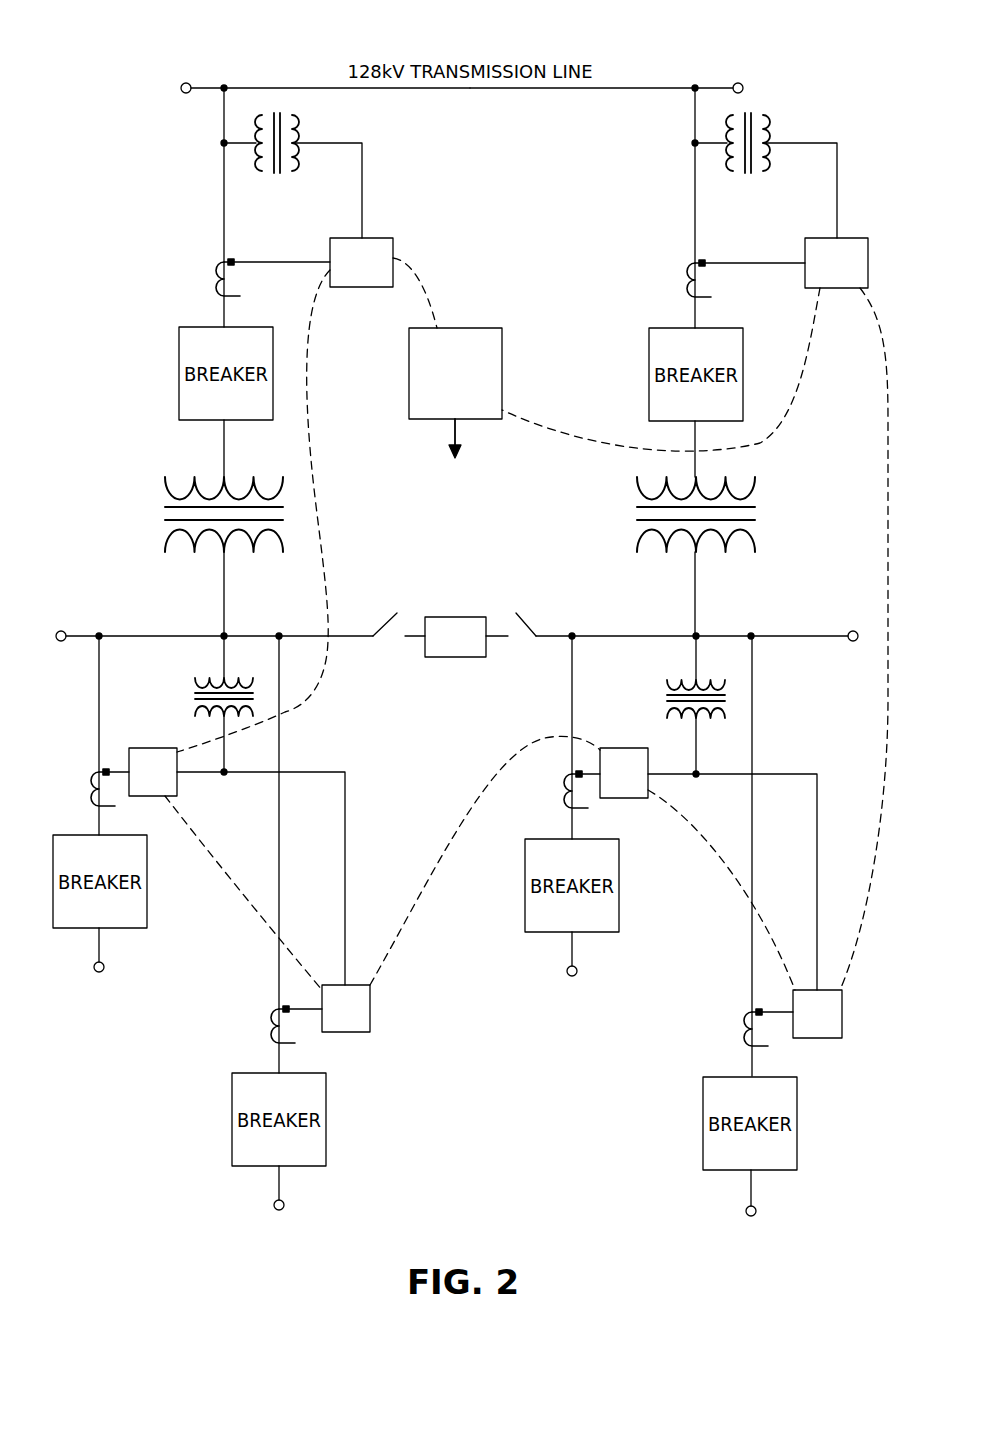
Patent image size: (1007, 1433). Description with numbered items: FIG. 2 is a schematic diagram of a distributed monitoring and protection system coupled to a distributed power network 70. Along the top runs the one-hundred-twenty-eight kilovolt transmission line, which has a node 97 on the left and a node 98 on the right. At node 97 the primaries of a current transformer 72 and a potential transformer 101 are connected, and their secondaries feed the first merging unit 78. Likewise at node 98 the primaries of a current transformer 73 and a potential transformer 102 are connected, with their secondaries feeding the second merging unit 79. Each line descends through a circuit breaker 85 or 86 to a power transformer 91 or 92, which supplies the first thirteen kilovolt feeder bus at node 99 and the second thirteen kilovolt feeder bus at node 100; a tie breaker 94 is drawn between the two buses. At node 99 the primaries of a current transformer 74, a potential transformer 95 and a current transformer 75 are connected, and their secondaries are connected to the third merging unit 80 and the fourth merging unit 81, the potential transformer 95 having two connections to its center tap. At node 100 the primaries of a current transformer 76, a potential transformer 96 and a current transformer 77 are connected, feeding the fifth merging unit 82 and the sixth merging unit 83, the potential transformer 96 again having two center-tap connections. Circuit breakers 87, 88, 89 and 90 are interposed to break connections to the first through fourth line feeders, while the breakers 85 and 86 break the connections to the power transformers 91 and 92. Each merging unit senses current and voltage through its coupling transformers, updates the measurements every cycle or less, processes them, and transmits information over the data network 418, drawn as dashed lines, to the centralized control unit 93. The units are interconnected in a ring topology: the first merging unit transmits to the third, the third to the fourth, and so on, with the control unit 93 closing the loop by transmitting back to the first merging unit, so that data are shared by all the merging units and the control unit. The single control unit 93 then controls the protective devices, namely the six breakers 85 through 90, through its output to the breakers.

The distributed power network 70 is at (106, 66).
The current transformer 72 is at (218, 264).
The current transformer 73 is at (690, 264).
The current transformer 74 is at (92, 772).
The current transformer 75 is at (273, 1009).
The current transformer 76 is at (568, 772).
The current transformer 77 is at (748, 1013).
The MU 1 78 is at (387, 238).
The MU 2 79 is at (856, 238).
The MU 3 80 is at (177, 786).
The MU 4 81 is at (370, 1012).
The MU 5 82 is at (640, 800).
The MU 6 83 is at (842, 1014).
The circuit breaker 85 is at (179, 371).
The circuit breaker 86 is at (649, 371).
The circuit breaker 87 is at (147, 905).
The circuit breaker 88 is at (232, 1116).
The circuit breaker 89 is at (618, 908).
The circuit breaker 90 is at (703, 1117).
The power transformer 91 is at (165, 481).
The power transformer 92 is at (637, 481).
The CU 93 is at (409, 370).
The tie breaker 94 is at (454, 617).
The potential transformer 95 is at (197, 681).
The potential transformer 96 is at (667, 681).
The node 97 is at (224, 85).
The node 98 is at (694, 85).
The node of 13 kV feeder bus 1 99 is at (228, 633).
The node of 13 kV feeder bus 2 100 is at (698, 633).
The potential transformer 101 is at (288, 172).
The potential transformer 102 is at (758, 172).
The network 418 is at (430, 290).